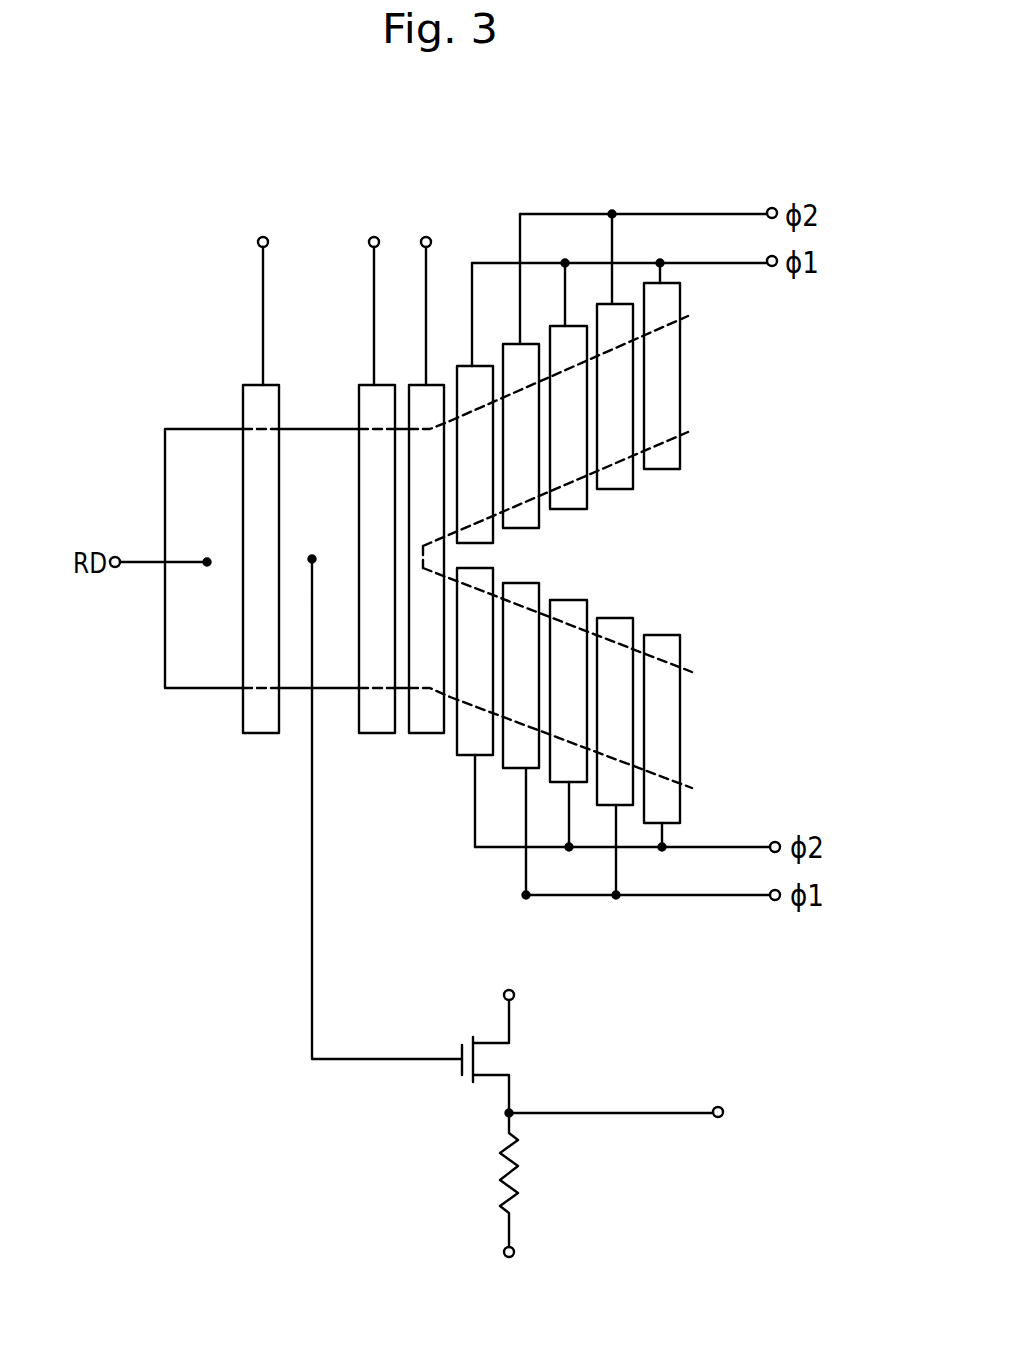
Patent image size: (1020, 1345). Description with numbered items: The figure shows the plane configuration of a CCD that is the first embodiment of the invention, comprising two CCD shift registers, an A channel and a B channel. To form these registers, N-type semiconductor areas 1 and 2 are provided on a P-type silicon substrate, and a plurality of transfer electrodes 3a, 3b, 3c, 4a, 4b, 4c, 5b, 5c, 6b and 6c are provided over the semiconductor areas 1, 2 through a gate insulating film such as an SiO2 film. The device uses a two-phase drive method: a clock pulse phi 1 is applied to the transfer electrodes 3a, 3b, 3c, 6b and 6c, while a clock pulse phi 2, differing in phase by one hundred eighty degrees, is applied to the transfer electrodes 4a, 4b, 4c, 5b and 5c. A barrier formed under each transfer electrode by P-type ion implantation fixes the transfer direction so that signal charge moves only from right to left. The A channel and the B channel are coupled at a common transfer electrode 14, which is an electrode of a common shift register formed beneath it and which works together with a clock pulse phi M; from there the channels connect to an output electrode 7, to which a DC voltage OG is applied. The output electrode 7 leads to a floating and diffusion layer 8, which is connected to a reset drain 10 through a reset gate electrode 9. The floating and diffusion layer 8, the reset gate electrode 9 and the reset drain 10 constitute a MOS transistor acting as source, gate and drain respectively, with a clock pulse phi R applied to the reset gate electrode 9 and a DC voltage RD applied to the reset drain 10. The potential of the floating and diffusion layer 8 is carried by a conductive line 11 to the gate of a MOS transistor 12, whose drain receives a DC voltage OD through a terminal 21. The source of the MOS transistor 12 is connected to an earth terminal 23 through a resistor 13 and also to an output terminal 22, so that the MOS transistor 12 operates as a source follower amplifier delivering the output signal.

The N-type semiconductor area 1 is at (697, 413).
The N-type semiconductor area 2 is at (692, 703).
The transfer electrode 3a is at (667, 468).
The transfer electrode 3b is at (575, 508).
The transfer electrode 3c is at (480, 541).
The transfer electrode 4a is at (667, 636).
The transfer electrode 4b is at (575, 601).
The transfer electrode 4c is at (478, 569).
The transfer electrode 5b is at (620, 488).
The transfer electrode 5c is at (528, 527).
The transfer electrode 6b is at (620, 619).
The transfer electrode 6c is at (528, 584).
The output electrode 7 is at (380, 730).
The floating and diffusion layer 8 is at (290, 679).
The reset gate electrode 9 is at (260, 727).
The reset drain 10 is at (195, 677).
The conductive line 11 is at (312, 1010).
The MOS transistor 12 is at (465, 1085).
The resistor 13 is at (487, 1192).
The common transfer electrode 14 is at (432, 728).
The terminal 21 is at (517, 989).
The output terminal 22 is at (722, 1107).
The earth terminal 23 is at (516, 1249).